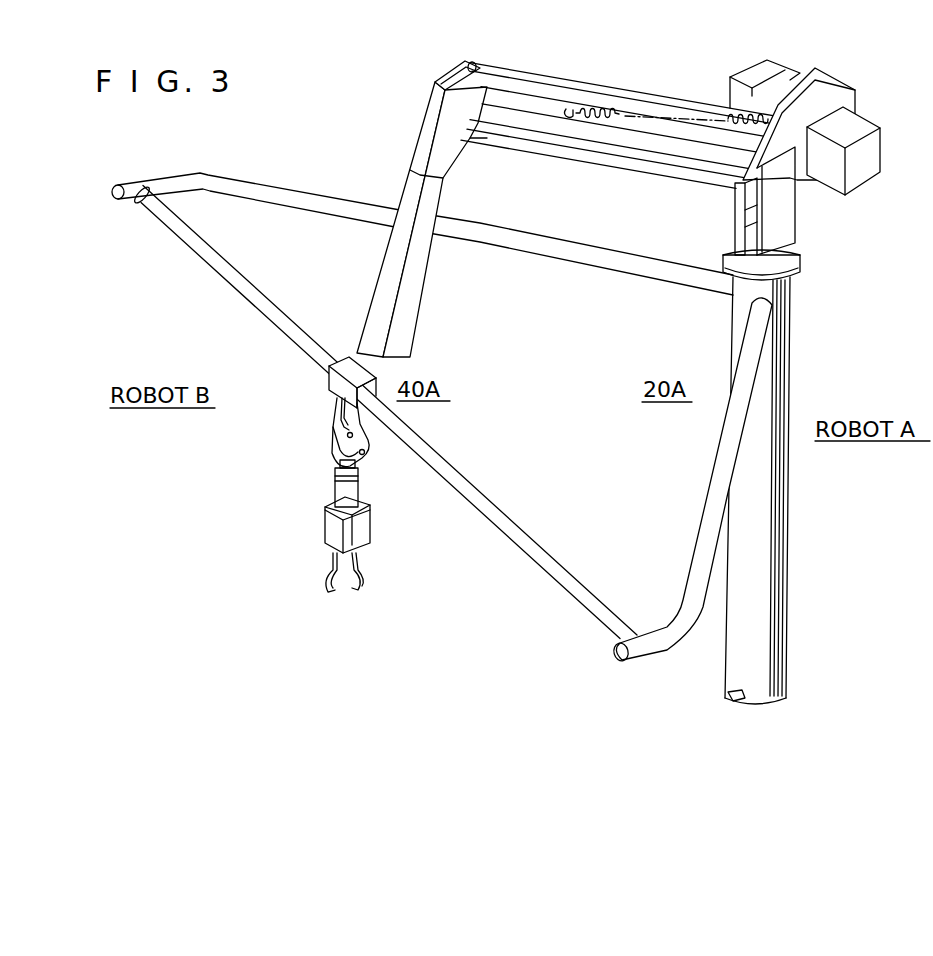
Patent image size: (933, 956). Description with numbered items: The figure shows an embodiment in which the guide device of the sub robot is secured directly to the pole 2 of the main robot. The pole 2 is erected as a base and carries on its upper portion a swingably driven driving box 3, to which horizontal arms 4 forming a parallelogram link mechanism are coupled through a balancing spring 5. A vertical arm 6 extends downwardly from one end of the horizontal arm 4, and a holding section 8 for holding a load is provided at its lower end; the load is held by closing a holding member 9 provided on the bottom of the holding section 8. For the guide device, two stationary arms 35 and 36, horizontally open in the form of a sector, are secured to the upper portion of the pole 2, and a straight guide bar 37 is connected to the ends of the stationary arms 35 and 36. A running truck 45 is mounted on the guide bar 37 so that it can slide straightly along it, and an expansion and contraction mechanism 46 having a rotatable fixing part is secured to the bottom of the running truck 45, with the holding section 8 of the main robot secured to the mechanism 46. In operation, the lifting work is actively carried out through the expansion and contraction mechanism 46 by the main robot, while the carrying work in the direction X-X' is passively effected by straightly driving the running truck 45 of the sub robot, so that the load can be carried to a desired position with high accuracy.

The pole 2 is at (785, 577).
The driving box 3 is at (847, 100).
The horizontal arm 4 is at (533, 103).
The balancing spring 5 is at (610, 118).
The vertical arm 6 is at (407, 195).
The holding section 8 is at (408, 521).
The holding member 9 is at (365, 572).
The stationary arm 35 is at (727, 452).
The stationary arm 36 is at (626, 259).
The guide bar 37 is at (530, 558).
The running truck 45 is at (329, 382).
The expansion and contraction mechanism 46 is at (340, 403).